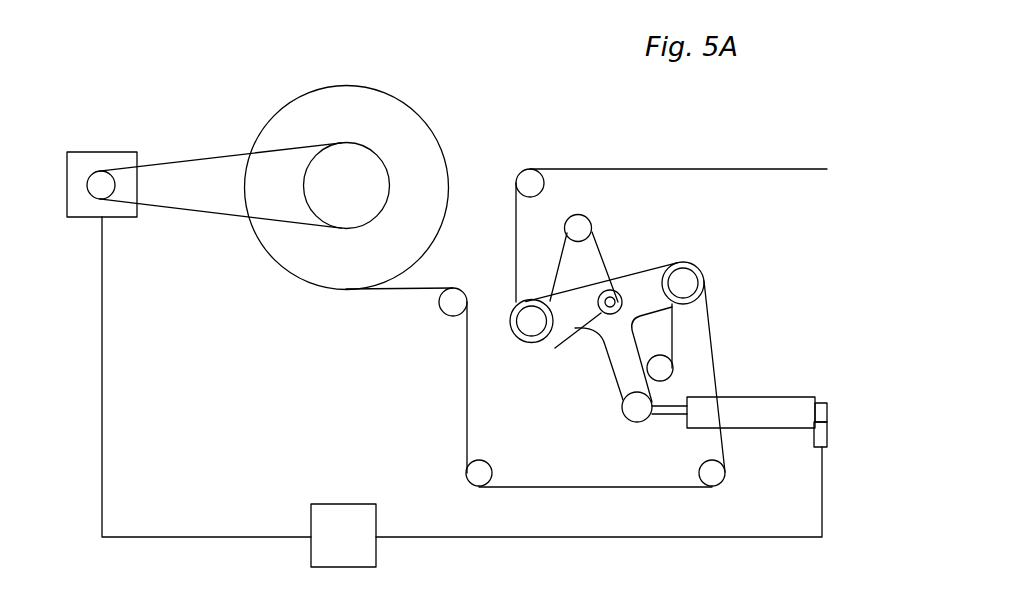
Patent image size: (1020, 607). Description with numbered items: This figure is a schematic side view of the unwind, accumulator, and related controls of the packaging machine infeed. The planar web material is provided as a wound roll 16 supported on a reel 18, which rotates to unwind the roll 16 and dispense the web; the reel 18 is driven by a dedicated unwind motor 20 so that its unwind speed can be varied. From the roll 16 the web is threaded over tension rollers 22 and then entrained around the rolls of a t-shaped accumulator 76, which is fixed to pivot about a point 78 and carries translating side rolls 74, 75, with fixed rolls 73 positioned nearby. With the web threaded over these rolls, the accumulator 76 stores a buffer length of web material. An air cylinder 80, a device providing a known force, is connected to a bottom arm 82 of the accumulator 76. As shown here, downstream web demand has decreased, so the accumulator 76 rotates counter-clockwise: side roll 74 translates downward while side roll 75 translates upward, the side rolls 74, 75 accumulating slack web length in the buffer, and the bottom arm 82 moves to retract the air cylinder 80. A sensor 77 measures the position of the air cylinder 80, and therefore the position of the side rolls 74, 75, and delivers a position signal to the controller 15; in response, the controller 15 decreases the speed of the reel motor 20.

The controller 15 is at (340, 515).
The wound roll 16 is at (375, 110).
The reel 18 is at (353, 165).
The unwind motor 20 is at (98, 155).
The tension rollers 22 is at (452, 305).
The fixed rolls 73 is at (580, 228).
The side roll 74 is at (527, 323).
The side roll 75 is at (688, 282).
The accumulator 76 is at (633, 270).
The sensor 77 is at (822, 433).
The pivot point 78 is at (577, 327).
The air cylinder 80 is at (760, 405).
The bottom arm 82 is at (614, 374).